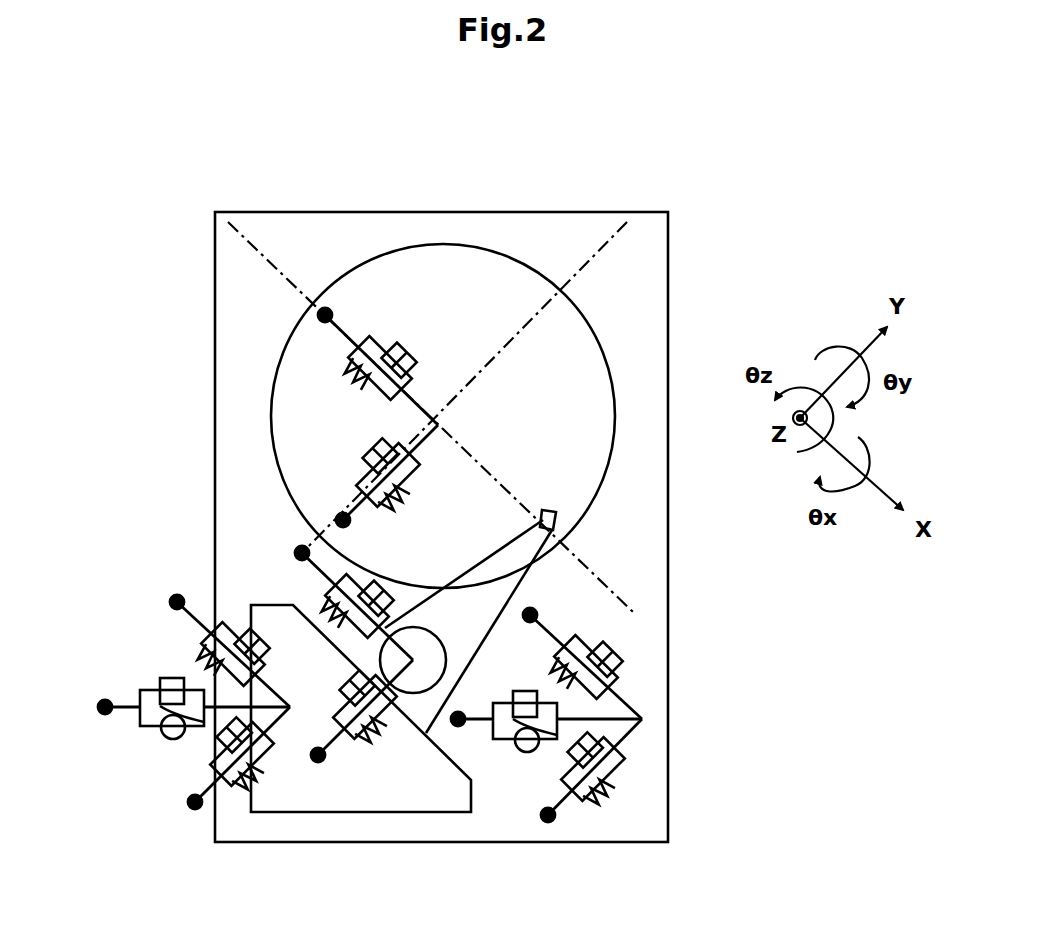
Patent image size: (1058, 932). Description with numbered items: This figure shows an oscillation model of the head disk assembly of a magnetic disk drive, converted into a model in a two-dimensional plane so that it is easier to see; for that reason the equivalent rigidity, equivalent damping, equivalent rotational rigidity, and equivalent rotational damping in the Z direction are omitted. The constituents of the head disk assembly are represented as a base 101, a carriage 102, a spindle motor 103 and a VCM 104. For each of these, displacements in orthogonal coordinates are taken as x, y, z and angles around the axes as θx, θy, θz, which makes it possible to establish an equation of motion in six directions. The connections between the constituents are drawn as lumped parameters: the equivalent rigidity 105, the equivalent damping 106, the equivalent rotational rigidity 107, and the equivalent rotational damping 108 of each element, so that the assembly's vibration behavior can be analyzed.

The base 101 is at (648, 687).
The carriage 102 is at (487, 607).
The spindle motor 103 is at (437, 280).
The VCM 104 is at (308, 792).
The equivalent rigidity 105 is at (623, 800).
The equivalent damping 106 is at (618, 638).
The equivalent rotational rigidity 107 is at (168, 752).
The equivalent rotational damping 108 is at (157, 673).